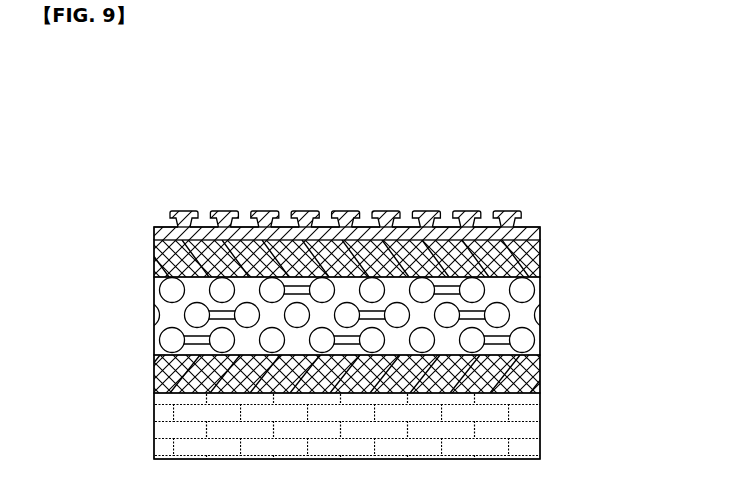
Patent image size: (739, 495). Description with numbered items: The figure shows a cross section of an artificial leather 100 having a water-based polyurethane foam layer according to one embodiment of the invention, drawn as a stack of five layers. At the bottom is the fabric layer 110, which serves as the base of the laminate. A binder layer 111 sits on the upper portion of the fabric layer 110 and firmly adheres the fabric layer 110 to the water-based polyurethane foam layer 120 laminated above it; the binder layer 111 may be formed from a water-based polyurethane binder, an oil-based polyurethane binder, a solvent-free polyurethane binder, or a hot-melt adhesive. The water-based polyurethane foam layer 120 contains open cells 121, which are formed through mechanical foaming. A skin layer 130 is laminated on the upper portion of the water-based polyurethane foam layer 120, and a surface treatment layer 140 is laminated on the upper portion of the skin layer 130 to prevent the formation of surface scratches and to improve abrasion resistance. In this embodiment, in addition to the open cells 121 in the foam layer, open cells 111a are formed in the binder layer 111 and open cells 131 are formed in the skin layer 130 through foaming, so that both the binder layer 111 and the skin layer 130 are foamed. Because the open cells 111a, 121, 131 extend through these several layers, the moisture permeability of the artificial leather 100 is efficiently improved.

The artificial leather 100 is at (266, 154).
The fabric layer 110 is at (540, 428).
The binder layer 111 is at (540, 372).
The open cells 111a is at (154, 383).
The water-based polyurethane foam layer 120 is at (540, 315).
The open cells 121 is at (154, 340).
The skin layer 130 is at (540, 258).
The open cells 131 is at (154, 268).
The surface treatment layer 140 is at (540, 233).